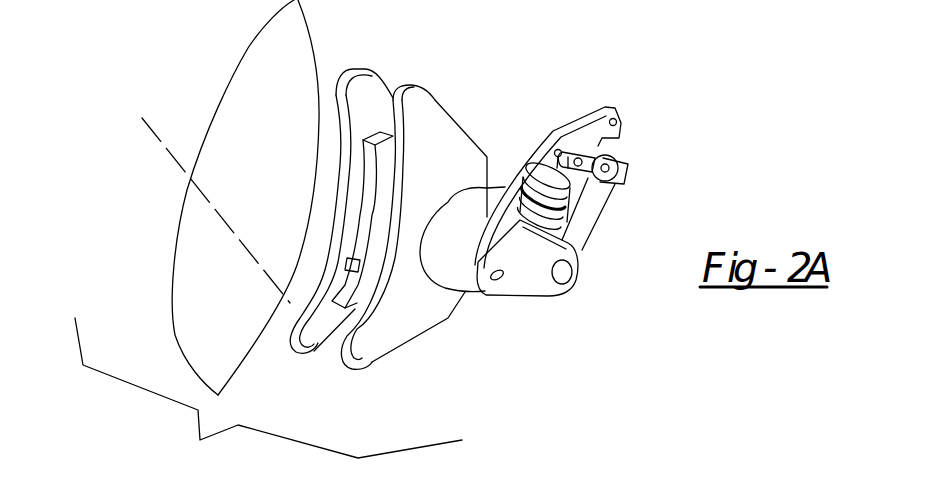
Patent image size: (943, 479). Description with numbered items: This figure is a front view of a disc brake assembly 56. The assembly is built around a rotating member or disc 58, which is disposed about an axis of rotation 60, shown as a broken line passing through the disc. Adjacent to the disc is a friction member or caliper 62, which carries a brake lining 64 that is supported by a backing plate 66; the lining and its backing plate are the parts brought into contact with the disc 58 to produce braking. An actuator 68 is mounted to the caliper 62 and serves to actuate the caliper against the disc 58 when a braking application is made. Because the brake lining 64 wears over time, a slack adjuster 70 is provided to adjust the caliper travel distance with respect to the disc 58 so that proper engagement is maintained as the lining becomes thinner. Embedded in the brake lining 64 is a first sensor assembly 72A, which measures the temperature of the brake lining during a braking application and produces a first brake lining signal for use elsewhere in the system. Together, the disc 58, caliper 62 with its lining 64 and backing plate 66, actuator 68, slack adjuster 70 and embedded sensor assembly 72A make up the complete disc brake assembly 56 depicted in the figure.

The disc brake assembly 56 is at (519, 82).
The disc 58 is at (231, 325).
The axis of rotation 60 is at (187, 177).
The caliper 62 is at (460, 288).
The brake lining 64 is at (385, 229).
The backing plate 66 is at (372, 91).
The actuator 68 is at (471, 207).
The slack adjuster 70 is at (538, 280).
The first sensor assembly 72A is at (348, 272).